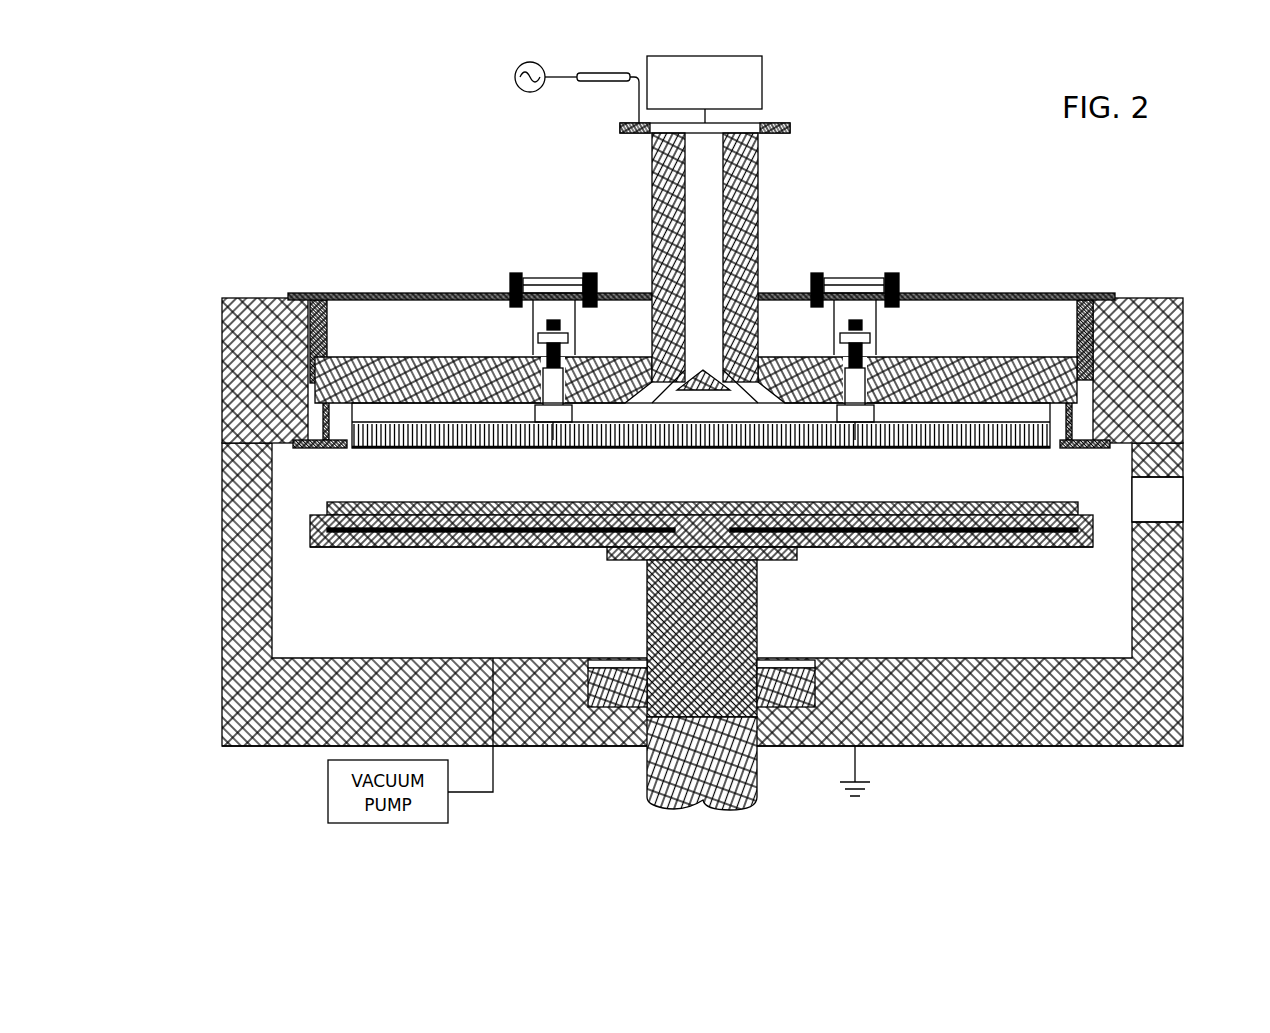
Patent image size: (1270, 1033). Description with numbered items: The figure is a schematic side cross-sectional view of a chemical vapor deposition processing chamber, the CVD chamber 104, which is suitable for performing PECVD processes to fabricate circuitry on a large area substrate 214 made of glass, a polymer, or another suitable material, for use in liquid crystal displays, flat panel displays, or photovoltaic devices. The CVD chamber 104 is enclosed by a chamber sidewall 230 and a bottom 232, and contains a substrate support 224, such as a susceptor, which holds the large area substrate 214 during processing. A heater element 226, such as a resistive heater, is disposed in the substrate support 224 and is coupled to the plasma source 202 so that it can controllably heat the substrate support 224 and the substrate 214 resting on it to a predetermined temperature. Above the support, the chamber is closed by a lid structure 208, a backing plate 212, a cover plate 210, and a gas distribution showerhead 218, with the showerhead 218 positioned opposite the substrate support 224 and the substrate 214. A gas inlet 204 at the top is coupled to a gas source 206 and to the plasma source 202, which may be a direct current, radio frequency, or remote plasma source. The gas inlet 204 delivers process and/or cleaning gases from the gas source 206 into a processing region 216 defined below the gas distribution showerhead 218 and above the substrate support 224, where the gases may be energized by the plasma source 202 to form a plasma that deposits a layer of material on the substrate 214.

The CVD chamber 104 is at (188, 260).
The plasma source 202 is at (514, 76).
The gas inlet 204 is at (620, 160).
The gas source 206 is at (721, 93).
The lid structure 208 is at (247, 298).
The cover plate 210 is at (418, 292).
The backing plate 212 is at (970, 357).
The large area substrate 214 is at (468, 502).
The processing region 216 is at (811, 486).
The gas distribution showerhead 218 is at (884, 456).
The substrate support 224 is at (968, 537).
The heater element 226 is at (496, 537).
The chamber sidewall 230 is at (1185, 697).
The bottom 232 is at (1070, 735).